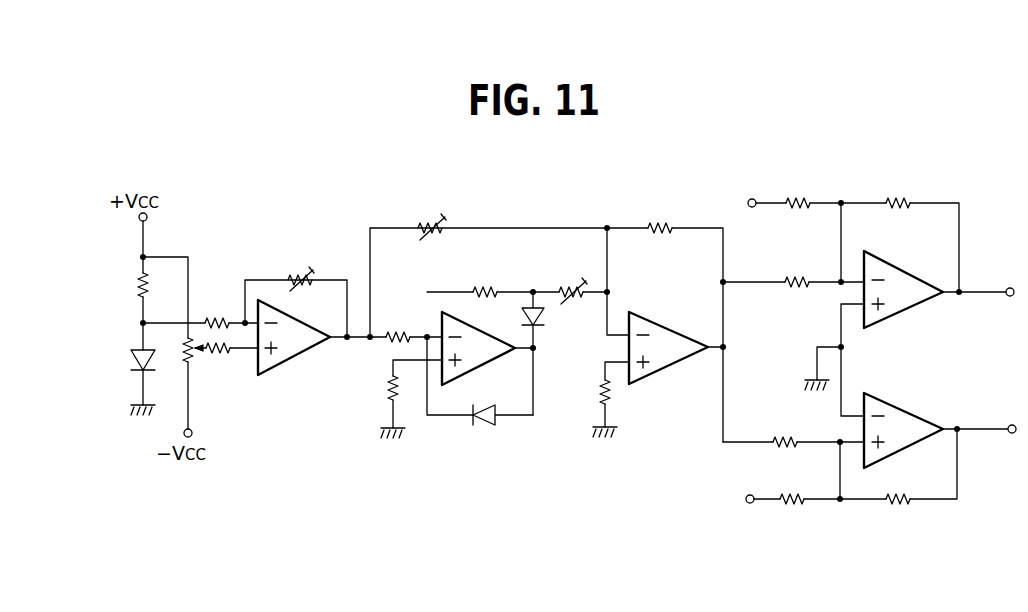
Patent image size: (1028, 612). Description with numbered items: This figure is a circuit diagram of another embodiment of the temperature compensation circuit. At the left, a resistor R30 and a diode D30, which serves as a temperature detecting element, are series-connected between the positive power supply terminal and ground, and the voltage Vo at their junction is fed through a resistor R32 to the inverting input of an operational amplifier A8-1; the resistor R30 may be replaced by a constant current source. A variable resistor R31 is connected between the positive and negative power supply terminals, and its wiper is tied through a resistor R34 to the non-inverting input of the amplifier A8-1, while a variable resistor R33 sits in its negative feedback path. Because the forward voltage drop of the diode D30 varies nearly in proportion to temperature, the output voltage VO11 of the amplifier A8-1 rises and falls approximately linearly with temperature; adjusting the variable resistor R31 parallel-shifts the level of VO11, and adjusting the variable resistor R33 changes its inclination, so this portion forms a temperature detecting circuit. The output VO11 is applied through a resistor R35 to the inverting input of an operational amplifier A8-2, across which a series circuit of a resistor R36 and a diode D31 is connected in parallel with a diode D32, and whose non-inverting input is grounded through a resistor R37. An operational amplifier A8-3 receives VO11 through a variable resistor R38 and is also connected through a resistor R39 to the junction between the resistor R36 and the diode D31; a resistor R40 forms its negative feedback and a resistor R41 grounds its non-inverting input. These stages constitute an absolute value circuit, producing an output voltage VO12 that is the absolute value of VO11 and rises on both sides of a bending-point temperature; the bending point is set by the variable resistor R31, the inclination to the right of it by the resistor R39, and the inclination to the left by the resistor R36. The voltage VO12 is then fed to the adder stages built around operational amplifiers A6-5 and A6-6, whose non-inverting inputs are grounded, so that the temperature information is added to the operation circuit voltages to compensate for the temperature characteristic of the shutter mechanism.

The resistor R30 is at (134, 285).
The input voltage node Vo is at (142, 323).
The diode D30 is at (132, 360).
The variable resistor R31 is at (191, 364).
The resistor R32 is at (217, 318).
The variable resistor R33 is at (297, 276).
The resistor R34 is at (227, 354).
The operational amplifier A8-1 is at (297, 356).
The output voltage VO11 is at (348, 341).
The resistor R35 is at (399, 332).
The resistor R36 is at (488, 287).
The resistor R37 is at (388, 392).
The variable resistor R38 is at (428, 224).
The resistor R39 is at (569, 287).
The resistor R40 is at (658, 224).
The resistor R41 is at (611, 394).
The operational amplifier A8-2 is at (491, 364).
The operational amplifier A8-3 is at (672, 330).
The diode D31 is at (537, 330).
The diode D32 is at (486, 427).
The output voltage VO12 is at (726, 347).
The operational amplifier A6-5 is at (905, 310).
The operational amplifier A6-6 is at (900, 409).